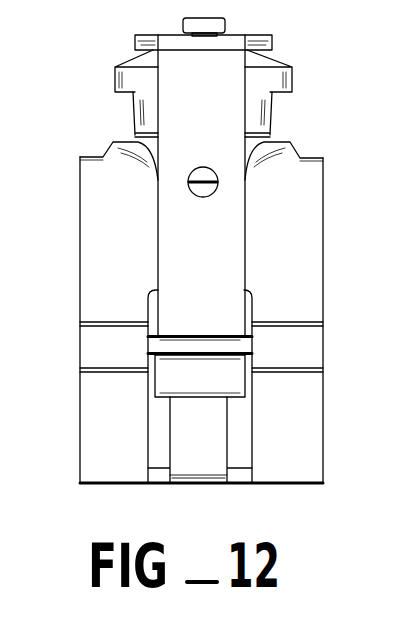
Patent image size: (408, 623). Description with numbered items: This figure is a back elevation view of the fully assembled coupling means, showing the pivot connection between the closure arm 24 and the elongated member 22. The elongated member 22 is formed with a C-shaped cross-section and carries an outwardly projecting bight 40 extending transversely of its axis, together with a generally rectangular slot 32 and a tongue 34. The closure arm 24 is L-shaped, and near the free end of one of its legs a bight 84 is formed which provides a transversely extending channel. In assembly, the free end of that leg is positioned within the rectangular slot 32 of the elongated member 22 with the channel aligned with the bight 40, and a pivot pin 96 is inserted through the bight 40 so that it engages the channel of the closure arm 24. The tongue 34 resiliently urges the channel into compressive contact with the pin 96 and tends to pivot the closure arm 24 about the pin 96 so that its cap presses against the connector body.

The elongated member 22 is at (307, 273).
The closure arm 24 is at (232, 257).
The outwardly projecting bight 40 is at (93, 342).
The pivot pin 96 is at (198, 343).
The bight 84 is at (218, 375).
The rectangular slot 32 is at (162, 447).
The tongue 34 is at (203, 458).